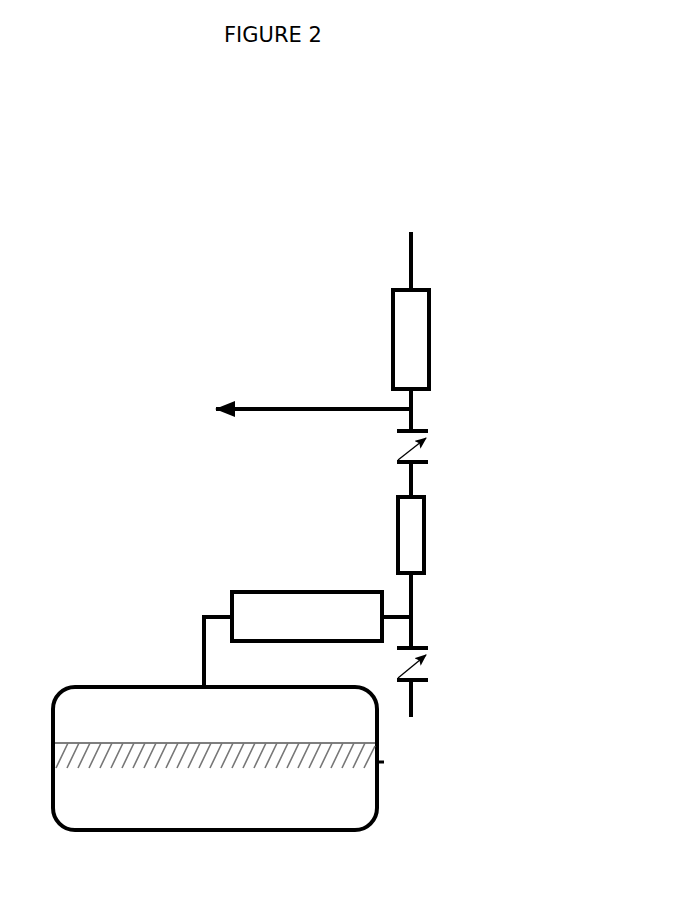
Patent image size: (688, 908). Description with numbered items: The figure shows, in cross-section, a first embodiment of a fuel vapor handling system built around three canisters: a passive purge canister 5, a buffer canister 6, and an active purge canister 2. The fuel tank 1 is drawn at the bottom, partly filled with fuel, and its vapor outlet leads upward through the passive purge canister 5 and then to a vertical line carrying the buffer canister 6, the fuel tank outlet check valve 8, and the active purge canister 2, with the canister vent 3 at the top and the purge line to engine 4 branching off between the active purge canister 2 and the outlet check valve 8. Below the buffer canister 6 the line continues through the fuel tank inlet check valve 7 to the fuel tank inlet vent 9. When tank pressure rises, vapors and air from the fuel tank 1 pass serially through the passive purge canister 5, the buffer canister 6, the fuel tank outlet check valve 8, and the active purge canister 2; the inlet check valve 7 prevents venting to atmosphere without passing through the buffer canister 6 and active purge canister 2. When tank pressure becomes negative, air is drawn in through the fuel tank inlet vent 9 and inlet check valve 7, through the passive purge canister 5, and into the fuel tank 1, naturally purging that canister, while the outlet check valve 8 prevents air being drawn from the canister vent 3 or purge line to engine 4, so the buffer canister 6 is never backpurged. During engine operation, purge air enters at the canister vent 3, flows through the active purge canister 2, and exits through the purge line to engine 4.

The fuel tank 1 is at (383, 791).
The active purge canister 2 is at (441, 334).
The canister vent 3 is at (428, 233).
The purge line to engine 4 is at (222, 383).
The passive purge canister 5 is at (296, 583).
The buffer canister 6 is at (430, 545).
The fuel tank inlet check valve 7 is at (444, 664).
The fuel tank outlet check valve 8 is at (440, 441).
The fuel tank inlet vent 9 is at (421, 718).